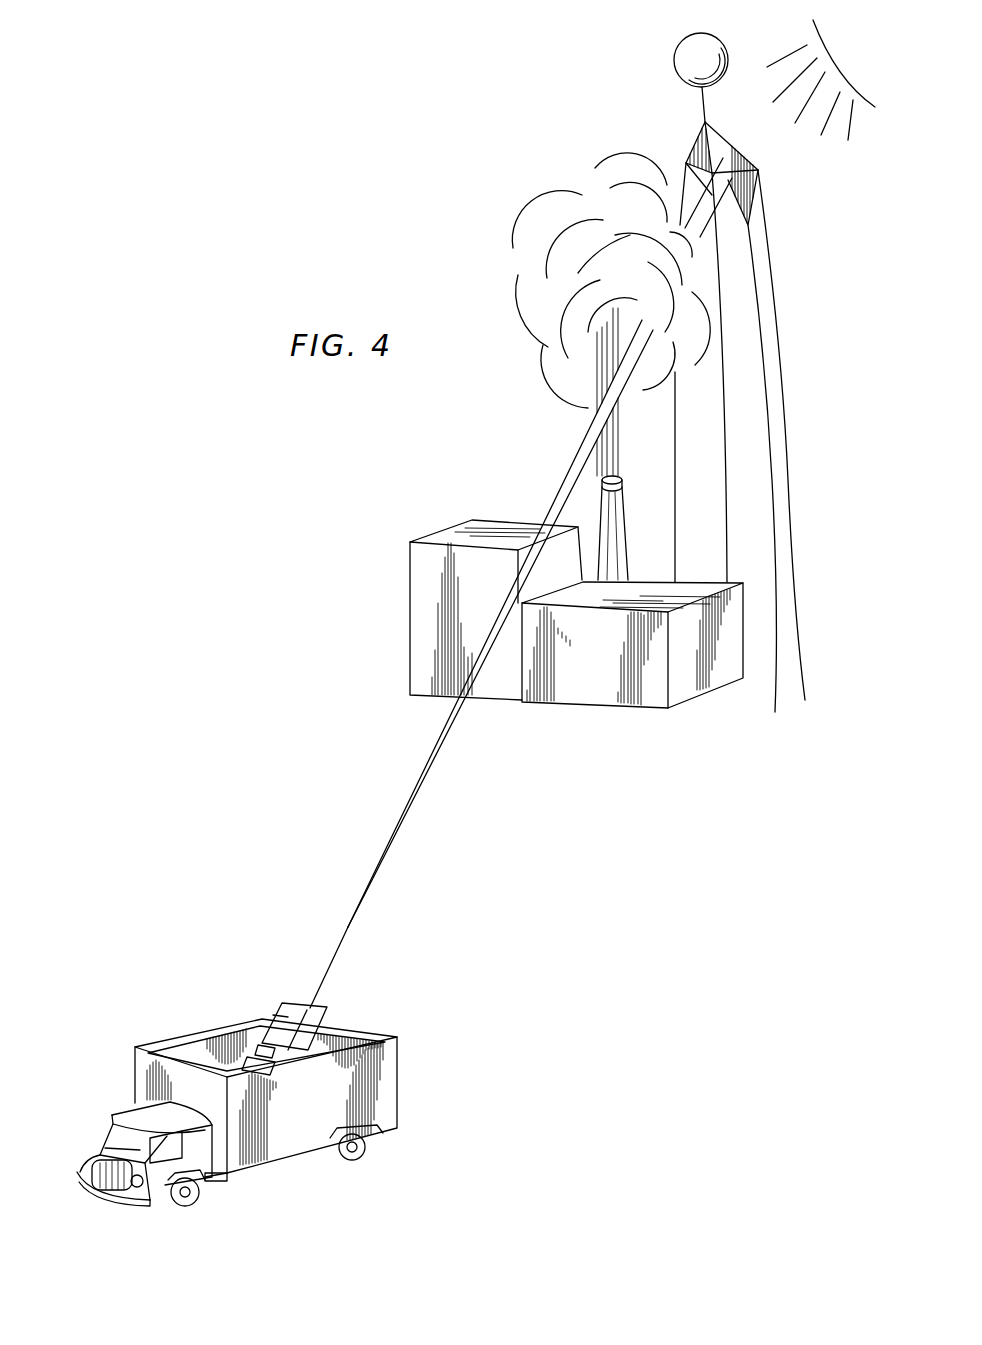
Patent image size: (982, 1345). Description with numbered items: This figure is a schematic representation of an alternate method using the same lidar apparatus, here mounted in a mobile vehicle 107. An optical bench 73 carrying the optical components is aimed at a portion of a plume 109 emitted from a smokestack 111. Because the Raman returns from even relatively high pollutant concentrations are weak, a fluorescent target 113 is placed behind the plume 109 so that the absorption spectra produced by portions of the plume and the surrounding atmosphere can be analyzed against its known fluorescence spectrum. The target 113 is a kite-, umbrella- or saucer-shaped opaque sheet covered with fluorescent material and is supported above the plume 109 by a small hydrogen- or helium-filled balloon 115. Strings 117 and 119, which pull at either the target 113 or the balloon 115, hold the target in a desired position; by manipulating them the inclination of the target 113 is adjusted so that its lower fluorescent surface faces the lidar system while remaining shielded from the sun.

The optical bench 73 is at (327, 1006).
The mobile vehicle 107 is at (393, 1095).
The plume 109 is at (548, 278).
The smokestack 111 is at (622, 518).
The fluorescent target 113 is at (752, 162).
The balloon 115 is at (680, 70).
The string 117 is at (675, 413).
The string 119 is at (728, 400).